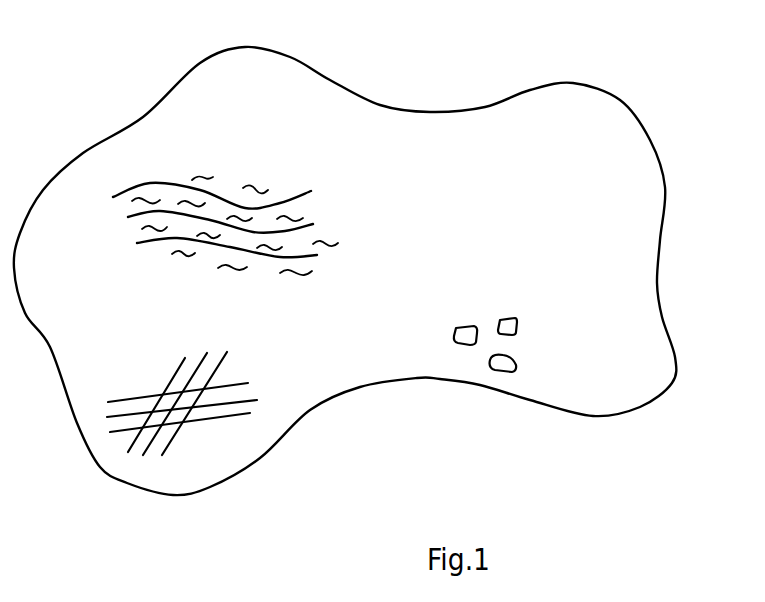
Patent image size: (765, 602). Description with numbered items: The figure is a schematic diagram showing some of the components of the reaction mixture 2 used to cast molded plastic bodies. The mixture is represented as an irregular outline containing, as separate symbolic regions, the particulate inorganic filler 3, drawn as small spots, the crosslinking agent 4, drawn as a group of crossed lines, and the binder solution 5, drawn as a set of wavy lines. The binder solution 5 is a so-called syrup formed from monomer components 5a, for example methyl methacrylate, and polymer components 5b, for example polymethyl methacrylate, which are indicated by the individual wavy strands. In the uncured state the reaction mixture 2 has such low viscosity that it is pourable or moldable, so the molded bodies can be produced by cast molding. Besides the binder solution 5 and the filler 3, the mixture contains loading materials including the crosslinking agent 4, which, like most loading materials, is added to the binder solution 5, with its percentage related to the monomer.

The reaction mixture 2 is at (335, 80).
The particulate inorganic filler 3 is at (503, 362).
The crosslinking agent 4 is at (177, 435).
The binder solution 5 is at (185, 160).
The monomer components 5a is at (143, 168).
The polymer components 5b is at (115, 197).